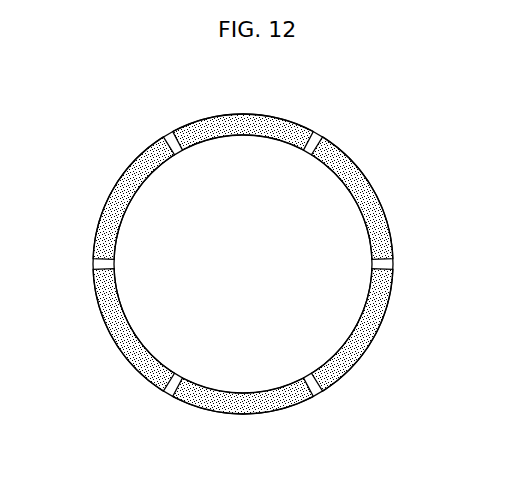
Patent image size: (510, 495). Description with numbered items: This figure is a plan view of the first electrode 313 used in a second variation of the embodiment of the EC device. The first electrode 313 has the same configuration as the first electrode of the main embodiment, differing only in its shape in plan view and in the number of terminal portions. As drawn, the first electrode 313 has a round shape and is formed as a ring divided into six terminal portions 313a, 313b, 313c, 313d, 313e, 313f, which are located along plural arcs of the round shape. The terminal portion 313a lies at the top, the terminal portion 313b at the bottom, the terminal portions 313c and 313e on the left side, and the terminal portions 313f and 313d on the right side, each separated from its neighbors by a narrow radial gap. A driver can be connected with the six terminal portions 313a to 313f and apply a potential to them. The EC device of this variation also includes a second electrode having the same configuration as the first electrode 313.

The first electrode 313 is at (394, 108).
The terminal portion 313a is at (236, 118).
The terminal portion 313b is at (261, 408).
The terminal portion 313c is at (127, 190).
The terminal portion 313d is at (361, 345).
The terminal portion 313e is at (130, 358).
The terminal portion 313f is at (377, 210).